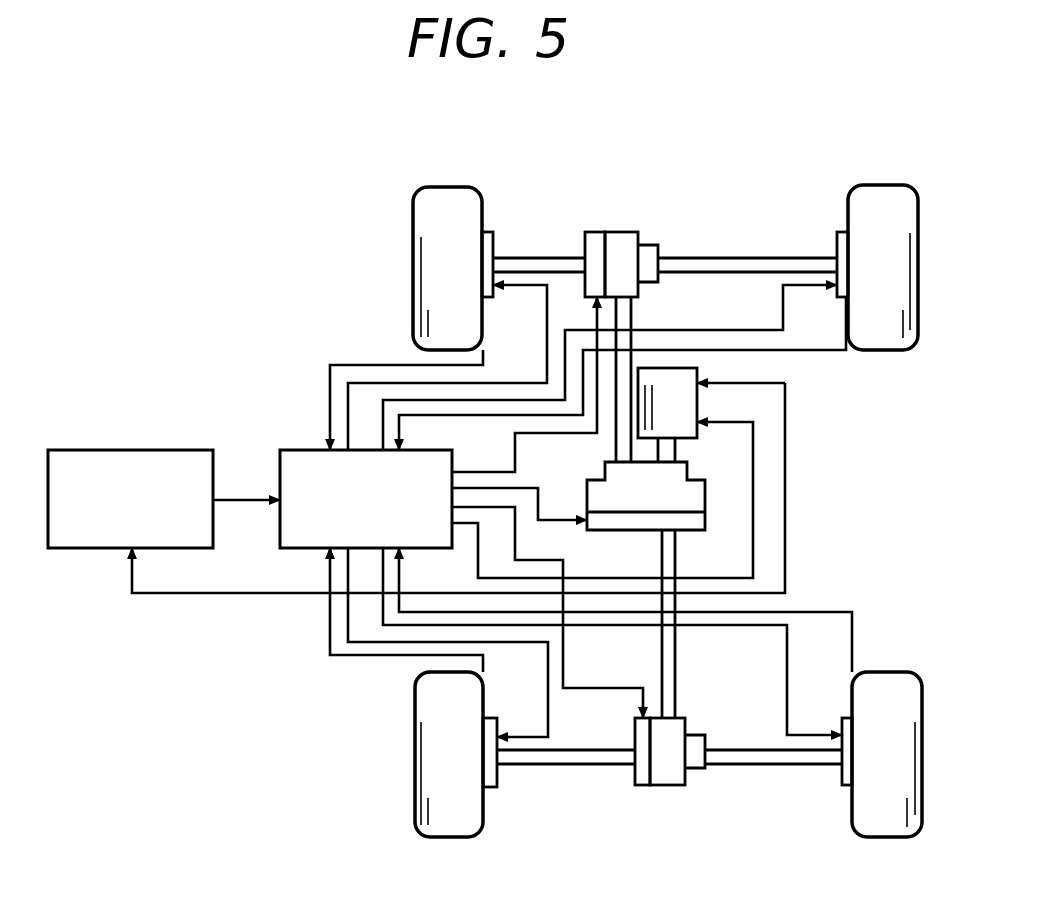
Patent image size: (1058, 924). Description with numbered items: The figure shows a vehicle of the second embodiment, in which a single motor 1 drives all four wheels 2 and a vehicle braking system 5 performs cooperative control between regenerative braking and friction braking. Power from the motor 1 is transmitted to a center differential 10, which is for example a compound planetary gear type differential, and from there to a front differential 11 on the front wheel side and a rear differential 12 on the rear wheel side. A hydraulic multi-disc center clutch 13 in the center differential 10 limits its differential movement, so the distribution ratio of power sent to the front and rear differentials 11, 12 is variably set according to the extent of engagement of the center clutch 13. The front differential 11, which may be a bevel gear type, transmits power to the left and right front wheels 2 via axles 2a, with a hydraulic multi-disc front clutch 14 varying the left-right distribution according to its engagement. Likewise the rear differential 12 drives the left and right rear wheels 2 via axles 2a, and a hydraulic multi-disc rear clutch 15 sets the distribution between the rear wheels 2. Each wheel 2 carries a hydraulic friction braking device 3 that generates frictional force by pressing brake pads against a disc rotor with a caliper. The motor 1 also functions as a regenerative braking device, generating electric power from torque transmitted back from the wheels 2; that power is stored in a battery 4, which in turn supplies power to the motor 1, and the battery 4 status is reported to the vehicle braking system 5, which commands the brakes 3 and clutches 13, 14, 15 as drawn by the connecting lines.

The motor 1 is at (687, 442).
The wheel 2 is at (452, 188).
The axle 2a is at (528, 258).
The friction braking device 3 is at (490, 233).
The battery 4 is at (90, 450).
The vehicle braking system 5 is at (298, 450).
The center differential 10 is at (592, 477).
The front differential 11 is at (650, 245).
The rear differential 12 is at (700, 772).
The center clutch 13 is at (690, 532).
The front clutch 14 is at (595, 232).
The rear clutch 15 is at (648, 786).